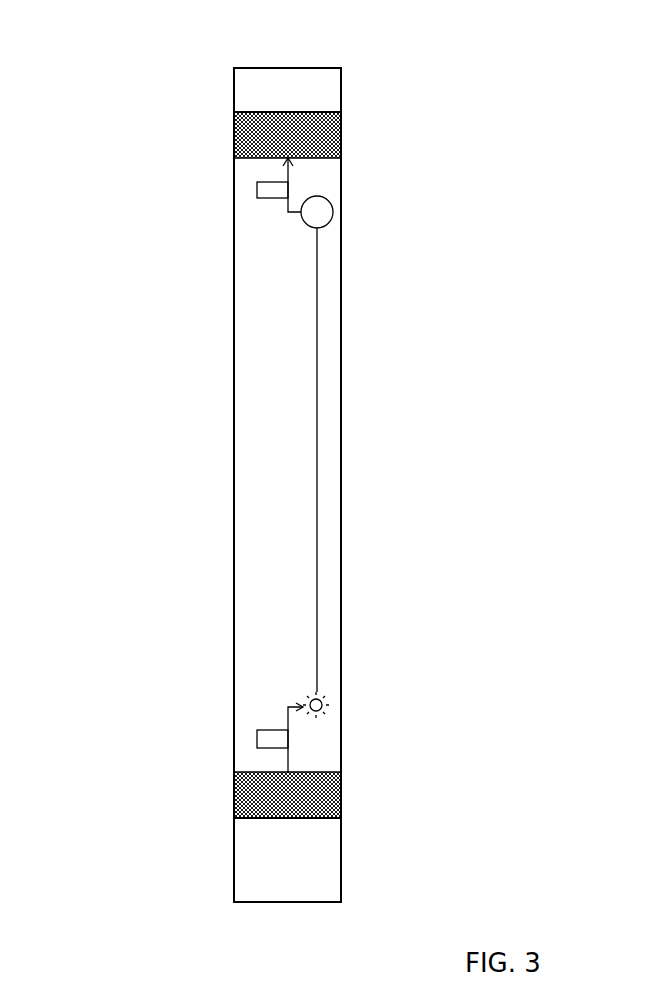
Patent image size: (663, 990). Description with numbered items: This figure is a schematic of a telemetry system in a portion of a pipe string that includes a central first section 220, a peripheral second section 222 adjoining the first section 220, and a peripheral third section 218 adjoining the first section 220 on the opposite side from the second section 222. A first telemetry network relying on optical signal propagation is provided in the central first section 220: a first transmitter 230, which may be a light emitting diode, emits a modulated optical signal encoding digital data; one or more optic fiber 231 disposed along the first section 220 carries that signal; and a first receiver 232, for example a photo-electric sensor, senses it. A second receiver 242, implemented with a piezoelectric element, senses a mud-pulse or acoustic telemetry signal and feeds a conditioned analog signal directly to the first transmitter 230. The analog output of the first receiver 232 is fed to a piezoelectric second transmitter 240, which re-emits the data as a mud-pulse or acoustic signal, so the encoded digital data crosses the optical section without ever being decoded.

The third section 218 is at (235, 847).
The first section 220 is at (235, 482).
The second section 222 is at (235, 88).
The first transmitter 230 is at (330, 702).
The optic fiber 231 is at (315, 452).
The first receiver 232 is at (333, 205).
The second transmitter 240 is at (330, 137).
The second receiver 242 is at (330, 797).